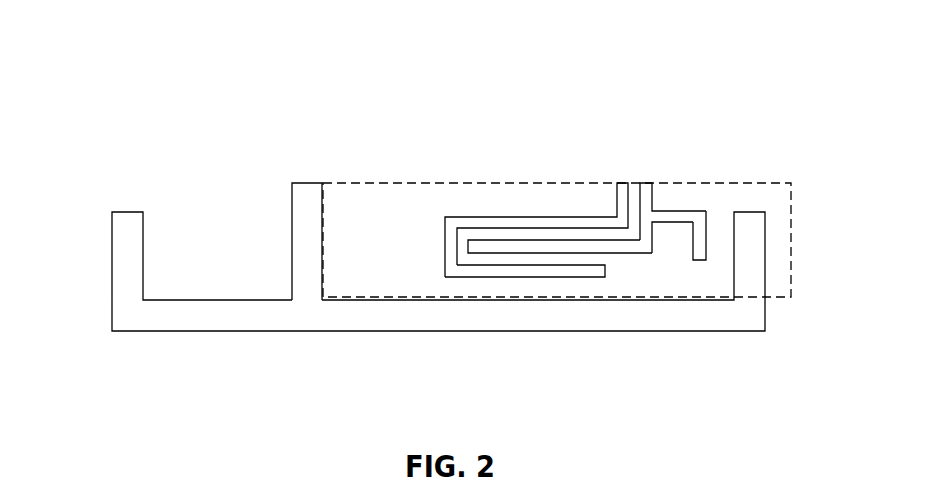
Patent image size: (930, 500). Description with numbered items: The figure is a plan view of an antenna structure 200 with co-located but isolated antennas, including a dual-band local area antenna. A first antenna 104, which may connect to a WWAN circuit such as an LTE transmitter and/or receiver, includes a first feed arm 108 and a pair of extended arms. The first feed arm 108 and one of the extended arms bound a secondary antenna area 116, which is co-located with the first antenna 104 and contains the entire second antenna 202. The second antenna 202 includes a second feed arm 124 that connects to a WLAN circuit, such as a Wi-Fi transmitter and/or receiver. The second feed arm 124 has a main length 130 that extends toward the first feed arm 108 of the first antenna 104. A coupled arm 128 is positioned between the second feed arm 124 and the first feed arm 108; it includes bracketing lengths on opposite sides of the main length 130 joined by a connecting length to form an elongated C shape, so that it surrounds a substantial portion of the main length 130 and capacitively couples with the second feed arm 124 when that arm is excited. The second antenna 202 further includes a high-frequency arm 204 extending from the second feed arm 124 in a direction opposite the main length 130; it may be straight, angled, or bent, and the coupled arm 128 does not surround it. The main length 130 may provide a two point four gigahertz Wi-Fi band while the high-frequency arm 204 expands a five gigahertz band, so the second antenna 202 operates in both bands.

The antenna structure 200 is at (425, 219).
The first antenna 104 is at (409, 287).
The first feed arm 108 is at (298, 238).
The secondary antenna area 116 is at (712, 288).
The second antenna 202 is at (536, 273).
The coupled arm 128 is at (485, 280).
The second feed arm 124 is at (632, 270).
The main length 130 is at (628, 253).
The high-frequency arm 204 is at (693, 214).